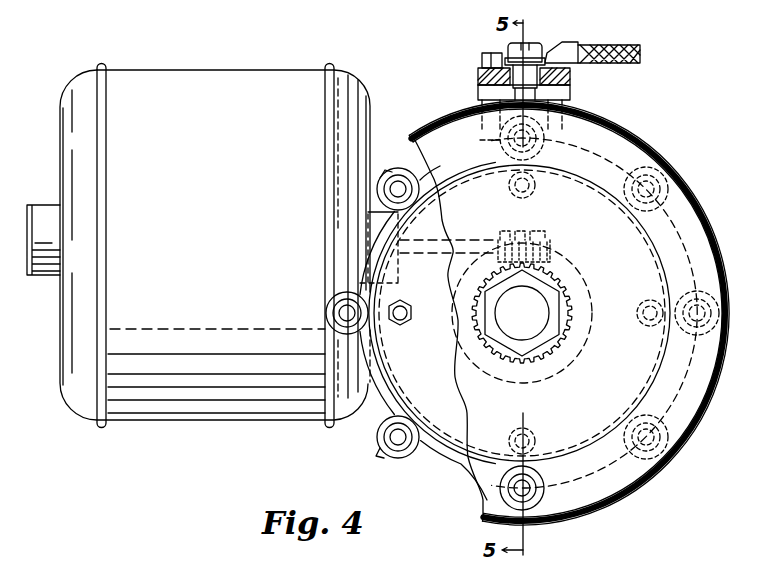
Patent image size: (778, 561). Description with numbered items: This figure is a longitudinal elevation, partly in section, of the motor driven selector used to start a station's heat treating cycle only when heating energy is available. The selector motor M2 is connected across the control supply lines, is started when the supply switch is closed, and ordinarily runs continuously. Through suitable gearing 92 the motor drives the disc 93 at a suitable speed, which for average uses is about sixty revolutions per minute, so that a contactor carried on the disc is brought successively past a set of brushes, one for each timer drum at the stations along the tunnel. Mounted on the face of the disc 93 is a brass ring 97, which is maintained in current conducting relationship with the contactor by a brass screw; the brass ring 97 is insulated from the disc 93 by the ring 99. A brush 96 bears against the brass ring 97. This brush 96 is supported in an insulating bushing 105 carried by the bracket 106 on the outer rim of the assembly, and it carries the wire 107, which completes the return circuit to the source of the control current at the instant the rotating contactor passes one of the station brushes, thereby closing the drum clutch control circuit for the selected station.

The selector motor M2 is at (214, 424).
The gearing 92 is at (552, 263).
The disc 93 is at (604, 398).
The brush 96 is at (570, 95).
The brass ring 97 is at (684, 450).
The ring 99 is at (610, 500).
The insulating bushing 105 is at (480, 83).
The bracket 106 is at (572, 82).
The wire 107 is at (589, 44).